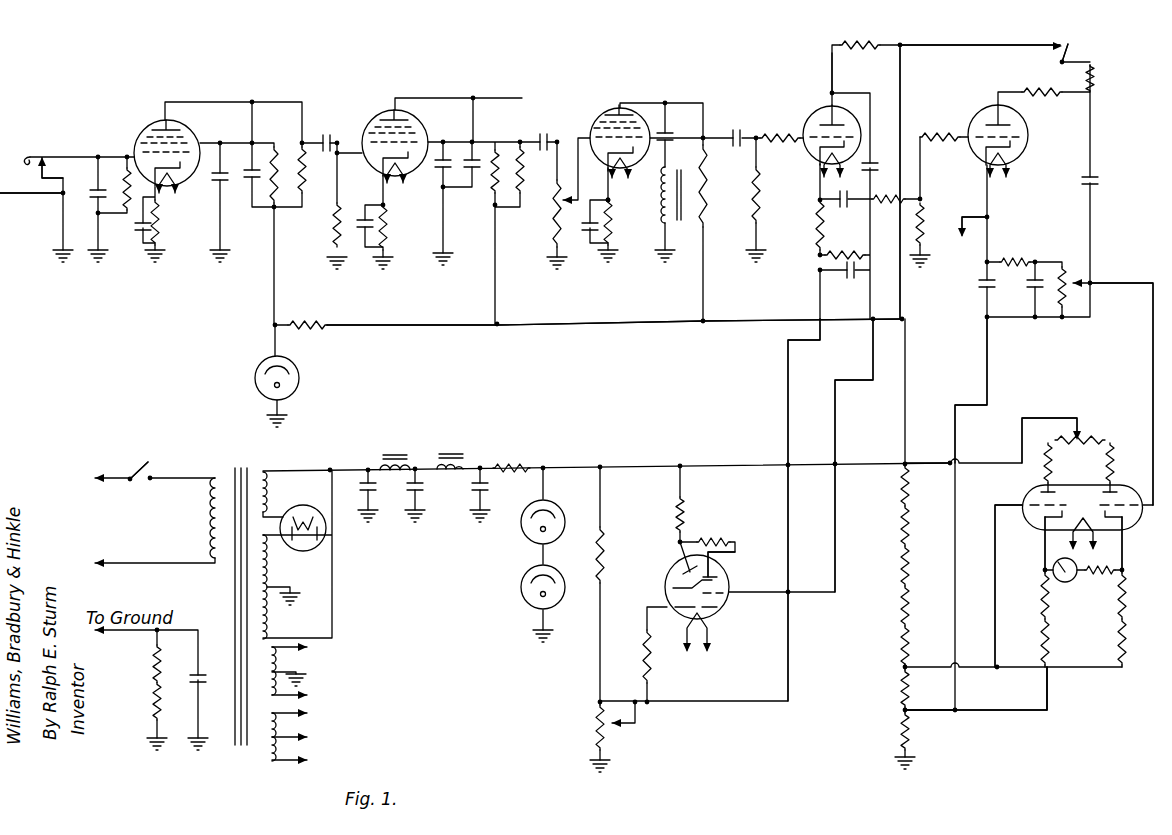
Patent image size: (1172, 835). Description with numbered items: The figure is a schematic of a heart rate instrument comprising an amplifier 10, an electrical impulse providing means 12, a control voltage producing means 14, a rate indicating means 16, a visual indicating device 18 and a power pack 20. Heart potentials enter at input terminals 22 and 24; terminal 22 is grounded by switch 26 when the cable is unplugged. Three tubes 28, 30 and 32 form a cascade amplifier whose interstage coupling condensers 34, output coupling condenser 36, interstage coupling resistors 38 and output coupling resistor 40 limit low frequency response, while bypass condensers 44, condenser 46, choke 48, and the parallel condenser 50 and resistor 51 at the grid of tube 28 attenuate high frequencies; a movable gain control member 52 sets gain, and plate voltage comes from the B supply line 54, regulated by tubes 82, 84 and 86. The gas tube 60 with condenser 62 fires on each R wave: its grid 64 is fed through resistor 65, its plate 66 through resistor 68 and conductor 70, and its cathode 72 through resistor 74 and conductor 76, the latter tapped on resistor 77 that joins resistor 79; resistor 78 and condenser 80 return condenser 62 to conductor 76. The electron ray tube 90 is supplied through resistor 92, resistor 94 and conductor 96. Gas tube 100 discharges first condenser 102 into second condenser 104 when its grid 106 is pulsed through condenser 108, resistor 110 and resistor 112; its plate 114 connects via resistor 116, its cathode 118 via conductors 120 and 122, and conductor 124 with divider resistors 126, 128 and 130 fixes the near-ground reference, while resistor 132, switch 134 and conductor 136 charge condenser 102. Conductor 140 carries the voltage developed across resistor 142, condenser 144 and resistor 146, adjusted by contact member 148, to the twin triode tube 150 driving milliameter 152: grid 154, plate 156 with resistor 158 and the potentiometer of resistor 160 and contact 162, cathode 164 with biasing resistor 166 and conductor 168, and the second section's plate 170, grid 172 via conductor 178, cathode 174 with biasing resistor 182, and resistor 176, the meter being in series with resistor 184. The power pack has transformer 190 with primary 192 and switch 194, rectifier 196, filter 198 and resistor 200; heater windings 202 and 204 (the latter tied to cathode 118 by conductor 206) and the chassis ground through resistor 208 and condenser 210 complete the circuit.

The amplifier 10 is at (429, 86).
The electrical impulse providing means 12 is at (810, 109).
The control voltage producing means 14 is at (977, 103).
The rate indicating means 16 is at (1098, 651).
The visual indicating device 18 is at (655, 578).
The power pack 20 is at (400, 598).
The amplifier input terminal 22 is at (25, 155).
The amplifier input terminal 24 is at (10, 194).
The switch 26 is at (46, 159).
The amplifier tube 28 is at (144, 124).
The amplifier tube 30 is at (370, 128).
The amplifier tube 32 is at (592, 122).
The interstage coupling condensers 34 is at (326, 134).
The output coupling condenser 36 is at (732, 137).
The interstage coupling resistors 38 is at (334, 218).
The output coupling resistor 40 is at (750, 200).
The bypass condensers 44 is at (252, 180).
The condenser 46 is at (670, 140).
The choke 48 is at (660, 222).
The condenser 50 is at (92, 242).
The resistor 51 is at (126, 232).
The movable gain control member 52 is at (586, 230).
The B supply line 54 is at (524, 324).
The gas tube 60 is at (804, 130).
The condenser 62 is at (876, 160).
The grid 64 is at (820, 148).
The resistor 65 is at (790, 140).
The plate 66 is at (832, 88).
The resistor 68 is at (840, 44).
The conductor 70 is at (900, 80).
The cathode 72 is at (820, 160).
The resistor 74 is at (818, 232).
The conductor 76 is at (788, 350).
The resistor 77 is at (600, 718).
The resistor 78 is at (848, 255).
The resistor 79 is at (604, 547).
The condenser 80 is at (852, 272).
The regulator tube 82 is at (520, 536).
The regulator tube 84 is at (518, 594).
The regulator tube 86 is at (300, 376).
The electron ray indicating tube 90 is at (724, 577).
The resistor 92 is at (672, 518).
The resistor 94 is at (654, 654).
The conductor 96 is at (836, 504).
The gas tube 100 is at (1026, 137).
The first condenser 102 is at (1094, 174).
The second condenser 104 is at (980, 297).
The grid 106 is at (1010, 132).
The condenser 108 is at (860, 192).
The resistor 110 is at (928, 136).
The resistor 112 is at (930, 212).
The plate 114 is at (1006, 111).
The resistor 116 is at (1024, 91).
The cathode 118 is at (1008, 154).
The conductor 120 is at (1032, 318).
The conductor 122 is at (984, 212).
The conductor 124 is at (990, 386).
The resistor 126 is at (912, 732).
The resistor 128 is at (904, 688).
The resistor 130 is at (902, 566).
The resistor 132 is at (1096, 82).
The switch 134 is at (1076, 44).
The conductor 136 is at (974, 48).
The conductor 140 is at (1152, 366).
The resistor 142 is at (1074, 280).
The condenser 144 is at (1056, 268).
The resistor 146 is at (1012, 260).
The movable contact member 148 is at (1076, 284).
The twin triode vacuum tube 150 is at (1026, 488).
The milliameter 152 is at (1070, 582).
The grid 154 is at (1104, 498).
The plate 156 is at (1106, 484).
The resistor 158 is at (1108, 458).
The resistor 160 is at (1070, 440).
The movable contact 162 is at (1076, 434).
The cathode 164 is at (1126, 526).
The biasing resistor 166 is at (1138, 592).
The conductor 168 is at (1056, 676).
The plate 170 is at (1048, 490).
The grid 172 is at (1010, 516).
The cathode 174 is at (1044, 532).
The resistor 176 is at (1048, 464).
The conductor 178 is at (992, 614).
The biasing resistor 182 is at (1046, 630).
The resistor 184 is at (1092, 572).
The transformer 190 is at (250, 464).
The primary 192 is at (214, 526).
The switch 194 is at (140, 462).
The full wave rectifier 196 is at (326, 528).
The filter 198 is at (422, 468).
The resistor 200 is at (514, 466).
The secondary winding 202 is at (306, 658).
The secondary winding 204 is at (306, 716).
The conductor 206 is at (956, 238).
The resistor 208 is at (154, 682).
The condenser 210 is at (200, 660).